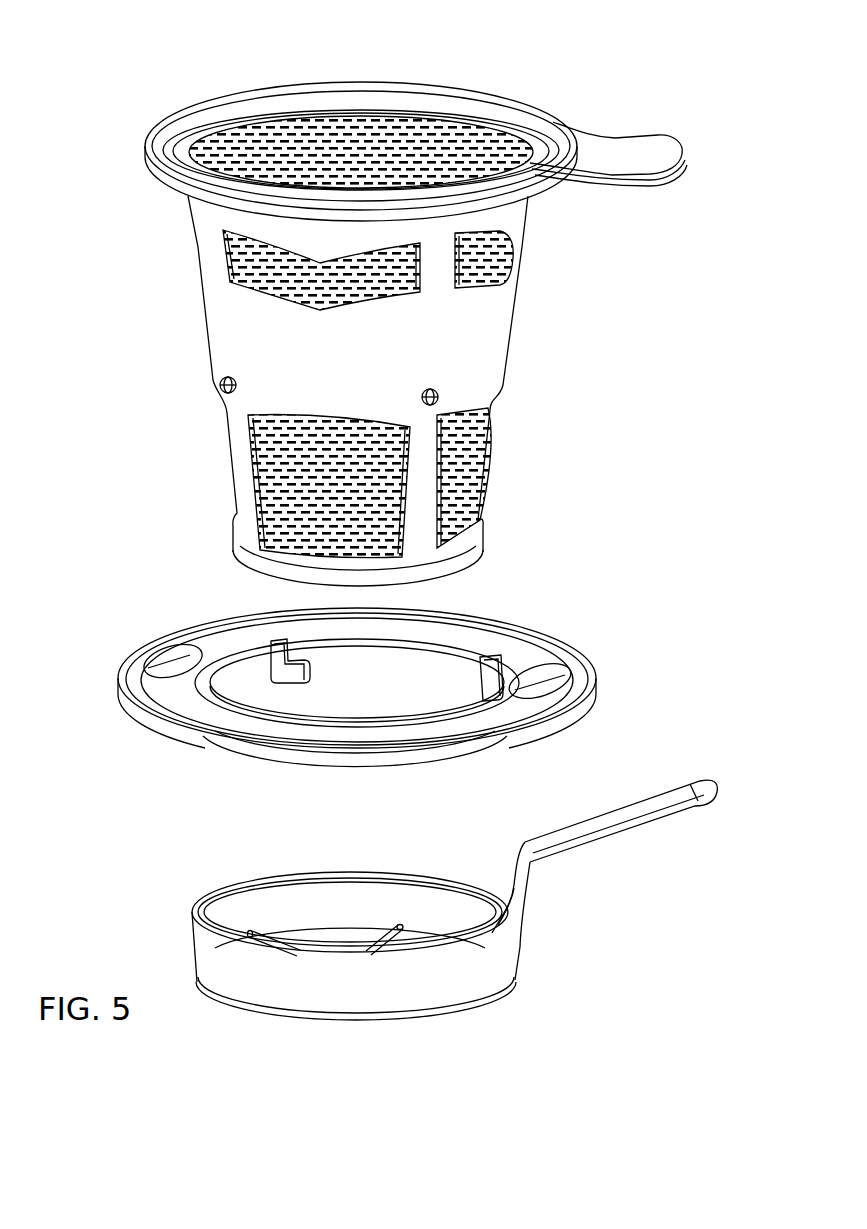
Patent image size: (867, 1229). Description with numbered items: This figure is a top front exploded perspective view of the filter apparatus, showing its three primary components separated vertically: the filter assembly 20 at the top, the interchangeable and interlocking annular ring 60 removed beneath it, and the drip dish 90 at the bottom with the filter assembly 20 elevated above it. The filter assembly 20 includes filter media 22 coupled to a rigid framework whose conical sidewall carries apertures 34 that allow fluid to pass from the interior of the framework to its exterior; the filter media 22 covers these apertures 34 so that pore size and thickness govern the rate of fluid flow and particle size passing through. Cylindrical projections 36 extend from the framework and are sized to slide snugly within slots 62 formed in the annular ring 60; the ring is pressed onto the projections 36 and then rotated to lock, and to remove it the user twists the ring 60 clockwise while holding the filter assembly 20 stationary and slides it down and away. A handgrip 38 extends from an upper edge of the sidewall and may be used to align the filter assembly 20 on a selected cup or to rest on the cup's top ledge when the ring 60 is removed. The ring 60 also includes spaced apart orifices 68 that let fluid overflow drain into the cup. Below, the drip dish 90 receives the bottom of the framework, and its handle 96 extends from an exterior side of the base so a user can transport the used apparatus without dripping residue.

The filter assembly 20 is at (482, 340).
The filter media 22 is at (343, 145).
The apertures 34 is at (250, 288).
The cylindrical projections 36 is at (220, 388).
The handgrip 38 is at (611, 149).
The annular ring 60 is at (138, 692).
The slots 62 is at (492, 655).
The orifices 68 is at (562, 668).
The drip dish 90 is at (353, 980).
The handle 96 is at (627, 832).